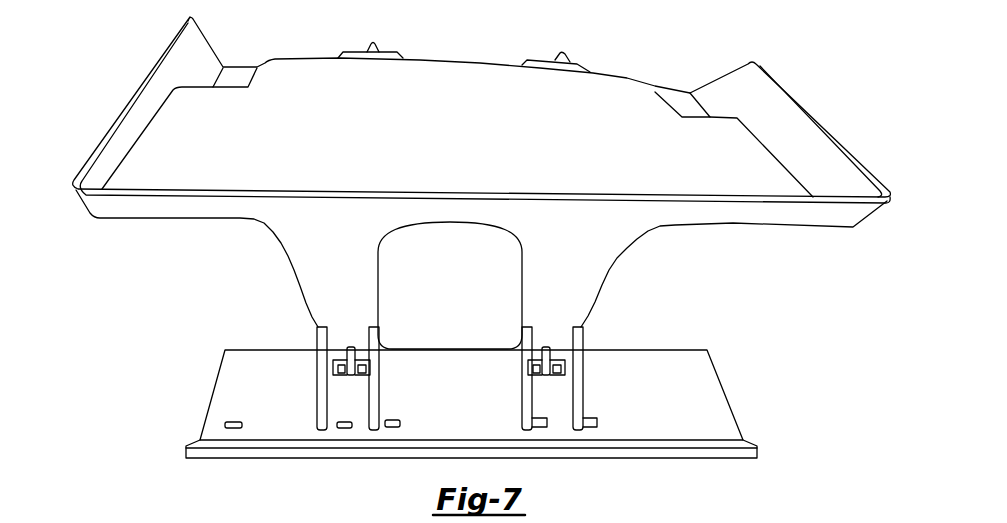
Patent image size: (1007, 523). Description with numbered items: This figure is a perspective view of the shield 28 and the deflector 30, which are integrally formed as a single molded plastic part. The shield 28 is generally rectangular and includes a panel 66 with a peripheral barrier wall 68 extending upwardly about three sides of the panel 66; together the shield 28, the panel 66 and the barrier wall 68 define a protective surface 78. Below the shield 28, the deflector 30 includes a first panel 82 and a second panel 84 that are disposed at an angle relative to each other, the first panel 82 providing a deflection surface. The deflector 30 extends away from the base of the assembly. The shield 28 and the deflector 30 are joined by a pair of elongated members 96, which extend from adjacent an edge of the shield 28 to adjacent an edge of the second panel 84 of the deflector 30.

The shield 28 is at (478, 75).
The deflector 30 is at (403, 445).
The panel 66 is at (350, 117).
The peripheral barrier wall 68 is at (160, 88).
The protective surface 78 is at (521, 161).
The first panel 82 is at (662, 452).
The second panel 84 is at (656, 402).
The elongated members 96 is at (538, 282).